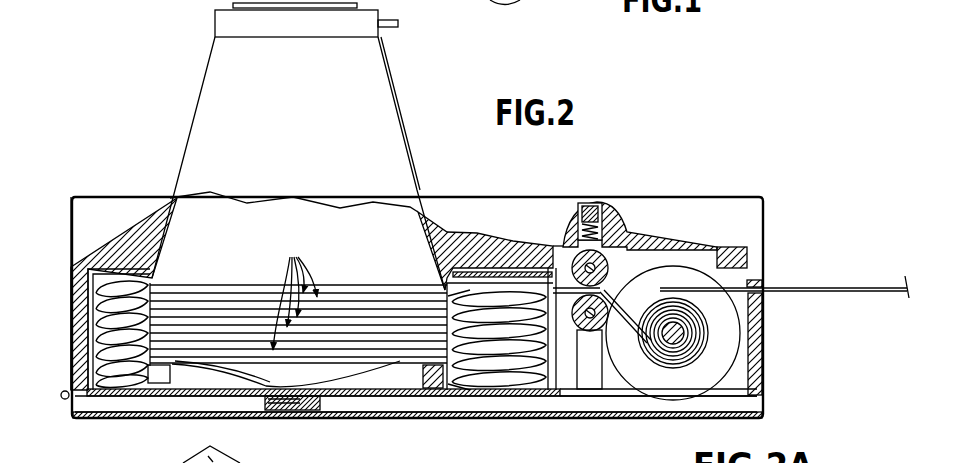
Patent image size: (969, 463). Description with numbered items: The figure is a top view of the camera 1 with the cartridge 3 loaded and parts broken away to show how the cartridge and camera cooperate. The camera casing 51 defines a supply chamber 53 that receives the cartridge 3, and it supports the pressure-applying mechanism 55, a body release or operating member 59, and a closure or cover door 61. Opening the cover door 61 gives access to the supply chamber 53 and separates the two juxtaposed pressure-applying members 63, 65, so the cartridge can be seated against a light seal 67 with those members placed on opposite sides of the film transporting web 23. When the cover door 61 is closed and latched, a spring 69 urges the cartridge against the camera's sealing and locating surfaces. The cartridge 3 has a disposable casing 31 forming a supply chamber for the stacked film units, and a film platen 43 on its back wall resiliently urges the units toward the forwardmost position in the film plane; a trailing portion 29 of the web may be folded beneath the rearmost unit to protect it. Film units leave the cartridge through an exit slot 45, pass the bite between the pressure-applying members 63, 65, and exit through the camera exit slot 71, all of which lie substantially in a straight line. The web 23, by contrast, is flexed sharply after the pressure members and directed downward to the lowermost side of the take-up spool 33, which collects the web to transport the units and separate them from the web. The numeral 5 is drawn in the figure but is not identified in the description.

The camera 1 is at (165, 140).
The cartridge 3 is at (453, 398).
The flow / strand 5 is at (862, 235).
The film transporting web 23 is at (656, 356).
The trailing portion of the transporting web 29 is at (493, 392).
The disposable casing 31 is at (183, 392).
The spool 33 is at (722, 322).
The film platen 43 is at (403, 363).
The exit slot 45 is at (552, 207).
The camera casing 51 is at (715, 220).
The supply chamber 53 is at (118, 212).
The pressure-applying mechanism 55 is at (612, 277).
The body release or operating member 59 is at (393, 28).
The cover door 61 is at (638, 416).
The pressure-applying member 63 is at (605, 240).
The pressure-applying member 65 is at (607, 332).
The light seal 67 is at (152, 277).
The spring 69 is at (320, 402).
The camera exit slot 71 is at (767, 280).